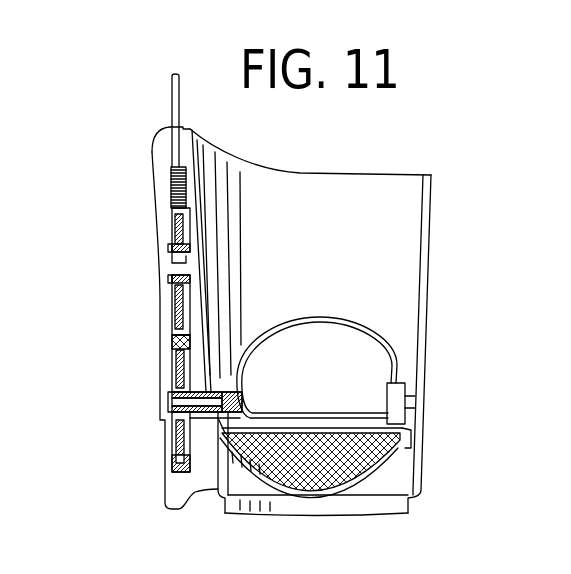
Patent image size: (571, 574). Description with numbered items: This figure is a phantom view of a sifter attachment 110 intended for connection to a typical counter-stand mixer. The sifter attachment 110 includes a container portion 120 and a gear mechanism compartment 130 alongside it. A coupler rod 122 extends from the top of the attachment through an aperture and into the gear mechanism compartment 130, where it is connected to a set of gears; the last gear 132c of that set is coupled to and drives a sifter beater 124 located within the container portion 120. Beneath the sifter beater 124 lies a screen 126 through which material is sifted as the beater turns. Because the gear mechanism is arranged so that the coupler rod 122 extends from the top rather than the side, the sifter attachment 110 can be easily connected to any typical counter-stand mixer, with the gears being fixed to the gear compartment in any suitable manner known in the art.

The sifter attachment 110 is at (107, 133).
The container portion 120 is at (452, 266).
The coupler rod 122 is at (143, 82).
The sifter beater 124 is at (378, 346).
The screen 126 is at (362, 463).
The gear mechanism compartment 130 is at (158, 332).
The gear 132c is at (541, 97).